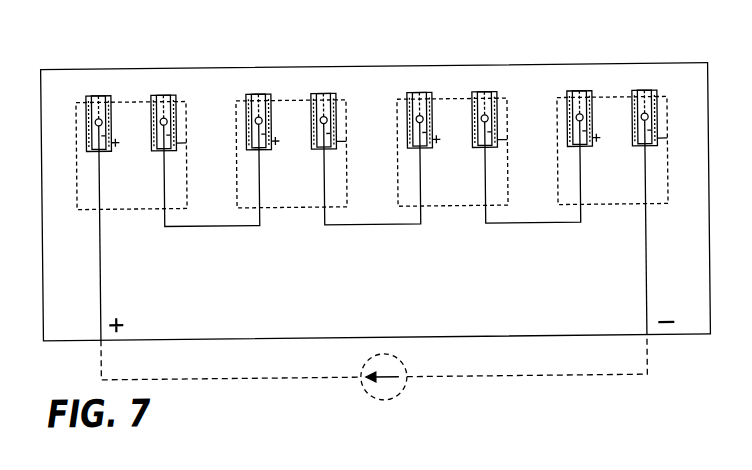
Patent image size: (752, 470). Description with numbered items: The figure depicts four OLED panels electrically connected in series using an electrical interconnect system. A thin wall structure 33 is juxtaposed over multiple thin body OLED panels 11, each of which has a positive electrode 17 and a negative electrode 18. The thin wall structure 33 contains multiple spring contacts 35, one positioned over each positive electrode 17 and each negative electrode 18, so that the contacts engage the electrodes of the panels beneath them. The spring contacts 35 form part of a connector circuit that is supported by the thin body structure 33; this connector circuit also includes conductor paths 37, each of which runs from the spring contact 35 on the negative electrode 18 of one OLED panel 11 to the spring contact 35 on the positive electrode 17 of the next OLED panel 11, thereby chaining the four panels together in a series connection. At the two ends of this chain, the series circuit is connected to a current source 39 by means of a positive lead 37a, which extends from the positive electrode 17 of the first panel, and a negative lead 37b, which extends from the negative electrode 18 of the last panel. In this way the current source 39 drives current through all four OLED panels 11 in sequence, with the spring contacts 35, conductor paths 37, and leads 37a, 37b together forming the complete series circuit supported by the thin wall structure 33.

The thin body OLED panel 11 is at (117, 208).
The positive electrode 17 is at (102, 96).
The negative electrode 18 is at (167, 96).
The thin wall structure 33 is at (640, 66).
The spring contact 35 is at (98, 105).
The conductor path 37 is at (164, 201).
The positive lead 37a is at (100, 305).
The negative lead 37b is at (646, 300).
The current source 39 is at (401, 390).